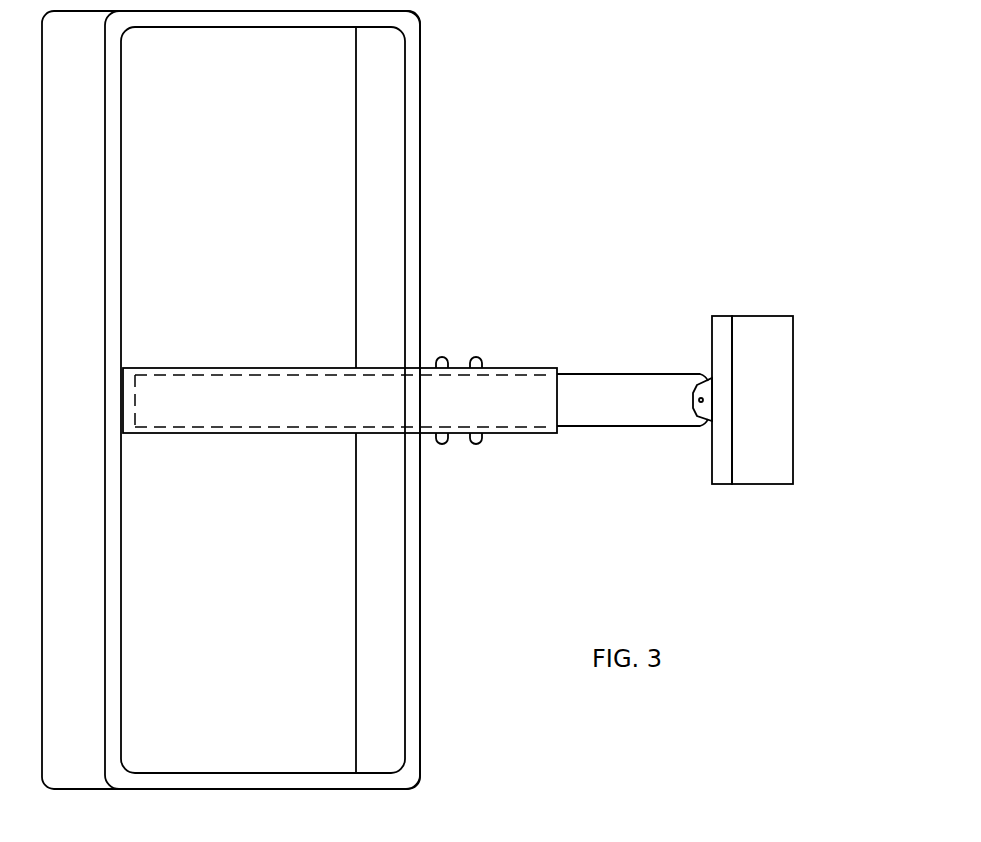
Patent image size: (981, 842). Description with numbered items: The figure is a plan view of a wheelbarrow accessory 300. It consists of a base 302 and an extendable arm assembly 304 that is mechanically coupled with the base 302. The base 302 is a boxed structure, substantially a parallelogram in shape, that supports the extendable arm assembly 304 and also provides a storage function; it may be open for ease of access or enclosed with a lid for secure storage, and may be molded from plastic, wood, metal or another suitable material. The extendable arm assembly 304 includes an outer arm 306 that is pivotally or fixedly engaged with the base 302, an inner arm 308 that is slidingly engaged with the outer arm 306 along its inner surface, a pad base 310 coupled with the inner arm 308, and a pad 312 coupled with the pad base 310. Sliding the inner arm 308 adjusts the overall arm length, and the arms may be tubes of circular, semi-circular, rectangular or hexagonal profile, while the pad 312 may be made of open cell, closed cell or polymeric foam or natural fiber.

The wheelbarrow accessory 300 is at (662, 82).
The base 302 is at (421, 202).
The extendable arm assembly 304 is at (506, 427).
The outer arm 306 is at (263, 367).
The inner arm 308 is at (608, 375).
The pad base 310 is at (712, 323).
The pad 312 is at (811, 385).